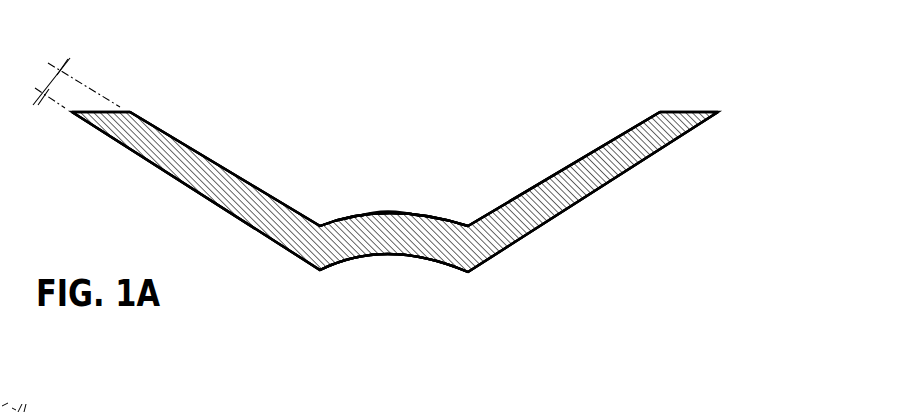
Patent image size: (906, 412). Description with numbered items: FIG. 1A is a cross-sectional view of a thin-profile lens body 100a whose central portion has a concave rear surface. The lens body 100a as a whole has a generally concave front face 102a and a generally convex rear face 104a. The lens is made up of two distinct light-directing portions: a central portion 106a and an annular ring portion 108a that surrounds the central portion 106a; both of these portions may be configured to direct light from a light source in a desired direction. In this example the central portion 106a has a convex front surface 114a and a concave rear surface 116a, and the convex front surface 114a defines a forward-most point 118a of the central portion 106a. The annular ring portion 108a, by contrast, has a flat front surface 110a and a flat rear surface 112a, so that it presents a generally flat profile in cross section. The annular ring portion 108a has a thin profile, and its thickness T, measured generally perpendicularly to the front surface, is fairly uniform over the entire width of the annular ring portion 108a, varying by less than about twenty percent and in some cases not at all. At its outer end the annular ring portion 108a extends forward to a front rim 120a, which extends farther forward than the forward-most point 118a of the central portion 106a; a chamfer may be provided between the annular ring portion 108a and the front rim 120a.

The lens body 100a is at (710, 75).
The front face 102a is at (405, 57).
The rear face 104a is at (401, 309).
The central portion 106a is at (417, 237).
The annular ring portion 108a is at (243, 178).
The flat front surface 110a is at (185, 145).
The flat rear surface 112a is at (167, 171).
The convex front surface 114a is at (347, 217).
The concave rear surface 116a is at (350, 260).
The forward-most point 118a is at (393, 213).
The front rim 120a is at (130, 112).
The thickness T is at (45, 95).